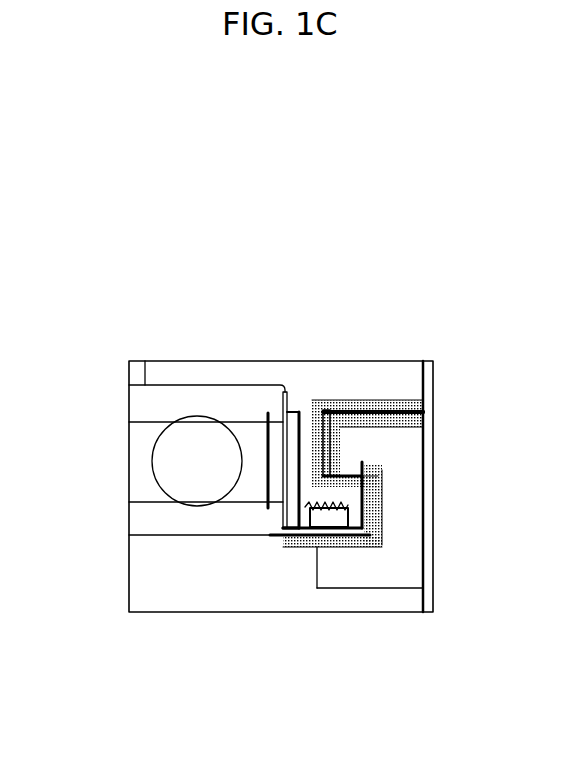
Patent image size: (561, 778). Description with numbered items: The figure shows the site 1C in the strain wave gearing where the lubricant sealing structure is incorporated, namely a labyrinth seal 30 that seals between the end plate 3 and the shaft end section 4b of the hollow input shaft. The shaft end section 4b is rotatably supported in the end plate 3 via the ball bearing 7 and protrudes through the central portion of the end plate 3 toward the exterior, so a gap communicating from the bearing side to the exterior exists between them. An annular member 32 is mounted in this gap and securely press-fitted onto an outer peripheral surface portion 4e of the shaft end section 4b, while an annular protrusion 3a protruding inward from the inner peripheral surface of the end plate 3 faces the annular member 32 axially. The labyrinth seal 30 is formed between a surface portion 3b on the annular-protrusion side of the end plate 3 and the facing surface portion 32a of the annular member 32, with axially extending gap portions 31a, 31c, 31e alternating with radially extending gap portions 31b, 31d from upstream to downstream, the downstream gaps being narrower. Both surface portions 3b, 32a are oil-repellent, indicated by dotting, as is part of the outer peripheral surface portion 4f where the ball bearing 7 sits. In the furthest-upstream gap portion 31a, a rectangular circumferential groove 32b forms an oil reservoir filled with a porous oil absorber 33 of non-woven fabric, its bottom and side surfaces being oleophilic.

The site 1C is at (412, 360).
The end plate 3 is at (216, 367).
The annular protrusion 3a is at (303, 457).
The surface portion 3b is at (347, 417).
The ball bearing 7 is at (131, 438).
The shaft end section 4b is at (184, 578).
The outer peripheral surface portion 4e is at (381, 588).
The outer peripheral surface portion 4f is at (285, 523).
The labyrinth seal 30 is at (507, 565).
The gap portion 31a is at (365, 538).
The gap portion 31b is at (364, 503).
The gap portion 31c is at (361, 468).
The gap portion 31d is at (324, 439).
The gap portion 31e is at (392, 412).
The annular member 32 is at (370, 422).
The surface portion 32a is at (330, 430).
The groove 32b is at (315, 537).
The oil absorber 33 is at (332, 533).